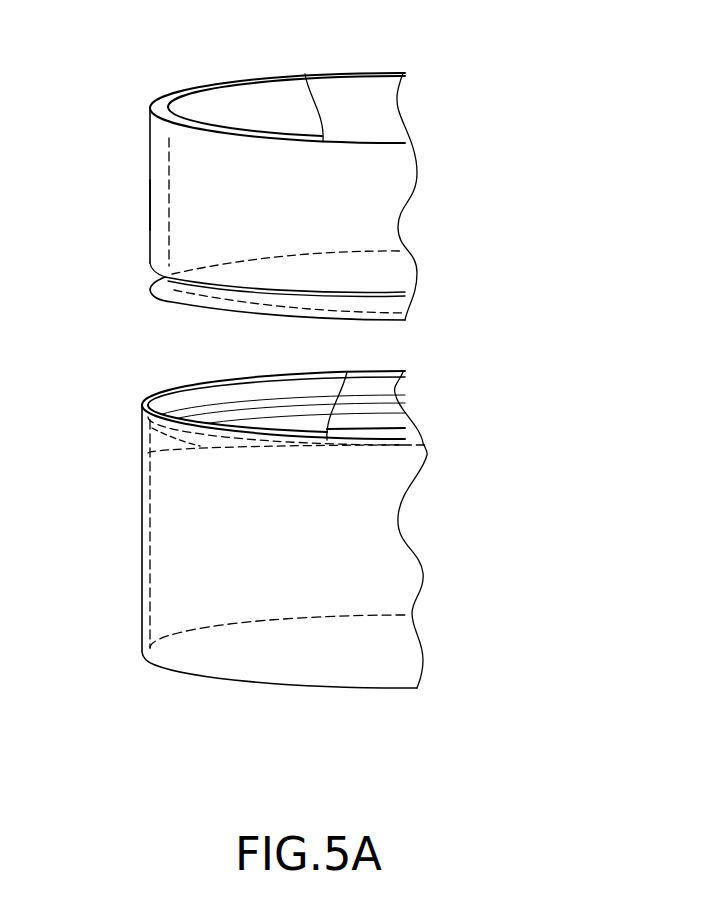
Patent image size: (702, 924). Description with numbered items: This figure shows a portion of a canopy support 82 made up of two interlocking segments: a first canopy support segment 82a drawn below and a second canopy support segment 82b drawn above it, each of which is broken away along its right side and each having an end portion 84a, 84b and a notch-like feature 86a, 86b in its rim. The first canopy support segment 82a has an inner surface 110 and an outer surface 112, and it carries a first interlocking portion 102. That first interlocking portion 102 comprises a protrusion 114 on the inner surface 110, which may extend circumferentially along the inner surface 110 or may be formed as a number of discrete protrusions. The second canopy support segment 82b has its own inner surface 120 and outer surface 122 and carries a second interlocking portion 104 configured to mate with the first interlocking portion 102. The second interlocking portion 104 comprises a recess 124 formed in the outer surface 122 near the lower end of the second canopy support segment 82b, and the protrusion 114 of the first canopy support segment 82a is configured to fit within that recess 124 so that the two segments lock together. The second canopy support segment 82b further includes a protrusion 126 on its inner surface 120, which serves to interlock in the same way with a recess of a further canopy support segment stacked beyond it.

The housing 82 is at (537, 693).
The first canopy support segment 82a is at (407, 577).
The second canopy support segment 82b is at (397, 223).
The first end wall 84a is at (266, 684).
The second end wall 84b is at (268, 318).
The first notch 86a is at (347, 372).
The second notch 86b is at (305, 74).
The first interlocking portion 102 is at (140, 455).
The second interlocking portion 104 is at (140, 283).
The inner surface 110 is at (146, 547).
The outer surface 112 is at (141, 580).
The protrusion 114 is at (163, 448).
The inner surface 120 is at (150, 200).
The outer surface 122 is at (150, 170).
The recess 124 is at (168, 277).
The protrusion 126 is at (173, 137).